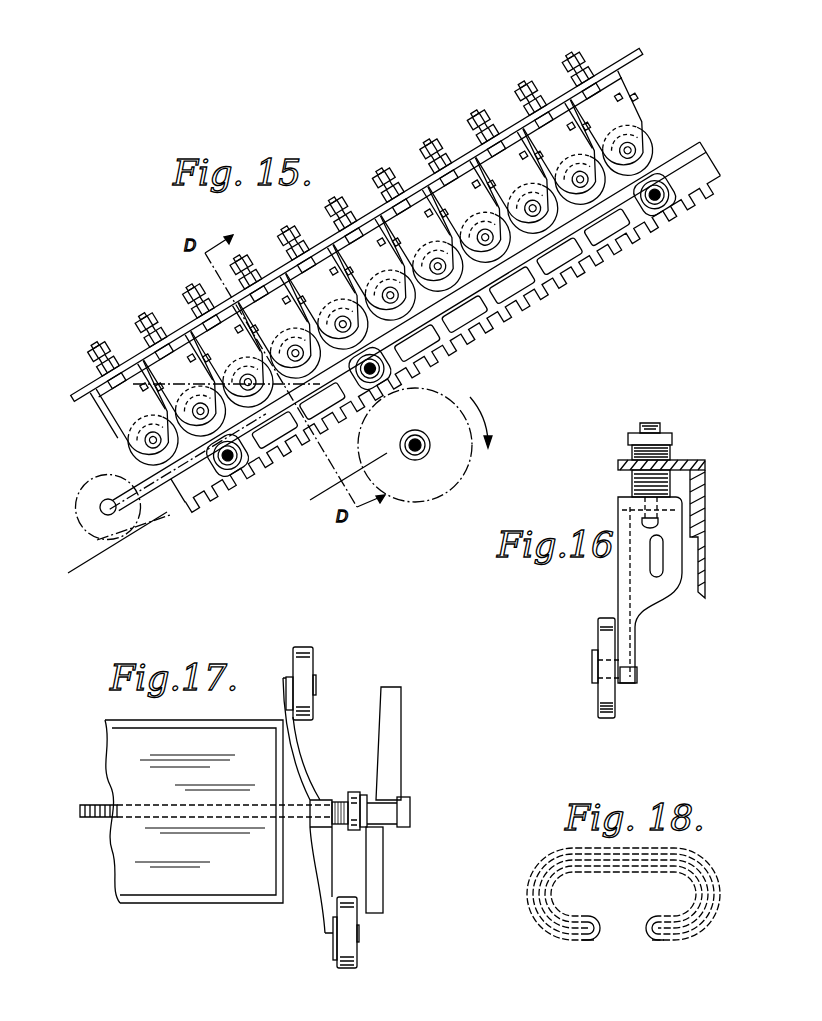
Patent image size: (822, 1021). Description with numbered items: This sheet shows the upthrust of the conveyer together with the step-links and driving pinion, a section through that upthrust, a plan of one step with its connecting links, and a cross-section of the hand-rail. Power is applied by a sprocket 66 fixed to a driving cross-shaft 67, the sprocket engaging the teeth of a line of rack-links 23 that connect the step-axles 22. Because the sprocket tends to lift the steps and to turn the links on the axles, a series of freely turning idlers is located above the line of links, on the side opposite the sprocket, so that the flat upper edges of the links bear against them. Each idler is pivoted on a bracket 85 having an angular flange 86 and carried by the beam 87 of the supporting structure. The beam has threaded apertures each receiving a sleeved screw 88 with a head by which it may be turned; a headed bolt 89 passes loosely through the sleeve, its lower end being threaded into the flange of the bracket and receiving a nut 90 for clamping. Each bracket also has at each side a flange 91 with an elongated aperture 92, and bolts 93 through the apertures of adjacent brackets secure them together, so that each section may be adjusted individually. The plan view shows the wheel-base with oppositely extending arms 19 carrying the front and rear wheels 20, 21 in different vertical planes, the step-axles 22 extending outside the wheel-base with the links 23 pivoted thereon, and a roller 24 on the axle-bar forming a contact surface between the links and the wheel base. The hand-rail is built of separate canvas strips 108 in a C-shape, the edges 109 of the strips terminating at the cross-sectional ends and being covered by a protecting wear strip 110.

In FIG. 17, the arms 19 is at (287, 748).
In FIG. 17, the front wheels 20 is at (303, 668).
In FIG. 17, the rear wheels 21 is at (352, 948).
In FIG. 17, the step-axles 22 is at (108, 822).
In FIG. 15, the links 23 is at (481, 327).
In FIG. 17, the links 23 is at (388, 762).
In FIG. 17, the roller 24 is at (357, 790).
In FIG. 15, the sprocket 66 is at (463, 468).
In FIG. 15, the driving cross-shaft 67 is at (423, 437).
In FIG. 15, the bracket 85 is at (625, 113).
In FIG. 16, the bracket 85 is at (628, 593).
In FIG. 15, the angular flange 86 is at (610, 77).
In FIG. 16, the angular flange 86 is at (627, 507).
In FIG. 15, the beam 87 is at (408, 185).
In FIG. 15, the sleeved screw 88 is at (436, 160).
In FIG. 16, the sleeved screw 88 is at (632, 455).
In FIG. 15, the headed bolt 89 is at (480, 117).
In FIG. 16, the headed bolt 89 is at (673, 450).
In FIG. 15, the nut 90 is at (553, 113).
In FIG. 16, the nut 90 is at (708, 498).
In FIG. 15, the flange 91 is at (637, 143).
In FIG. 16, the flange 91 is at (653, 593).
In FIG. 16, the elongated aperture 92 is at (653, 555).
In FIG. 15, the bolts 93 is at (531, 163).
In FIG. 18, the strips 108 is at (712, 867).
In FIG. 18, the edges 109 is at (650, 937).
In FIG. 18, the wear strip 110 is at (577, 917).